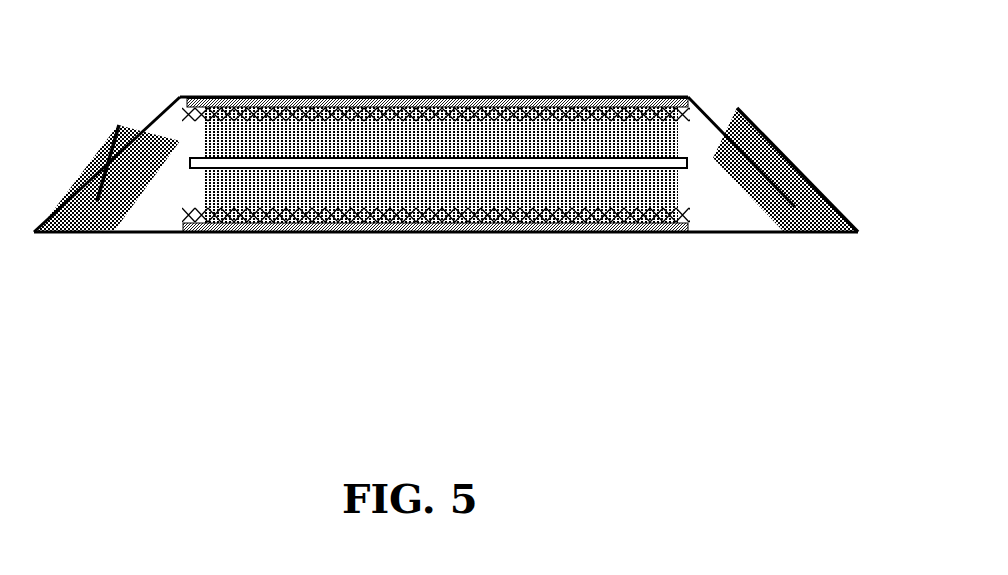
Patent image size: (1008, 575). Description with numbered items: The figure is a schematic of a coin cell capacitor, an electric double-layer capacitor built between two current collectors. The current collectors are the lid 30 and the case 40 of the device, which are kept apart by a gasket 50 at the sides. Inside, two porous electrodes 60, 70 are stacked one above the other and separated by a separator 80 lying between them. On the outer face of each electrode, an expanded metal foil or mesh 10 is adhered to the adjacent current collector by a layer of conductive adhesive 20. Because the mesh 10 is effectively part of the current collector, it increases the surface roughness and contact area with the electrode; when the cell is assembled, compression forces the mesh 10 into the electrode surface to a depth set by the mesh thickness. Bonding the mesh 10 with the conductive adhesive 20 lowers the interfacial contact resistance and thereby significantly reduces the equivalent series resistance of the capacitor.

The expanded metal foil or mesh 10 is at (347, 113).
The conductive adhesive 20 is at (540, 102).
The lid 30 is at (703, 105).
The case 40 is at (733, 235).
The gasket 50 is at (803, 195).
The electrode 60 is at (248, 145).
The electrode 70 is at (365, 190).
The separator 80 is at (272, 162).